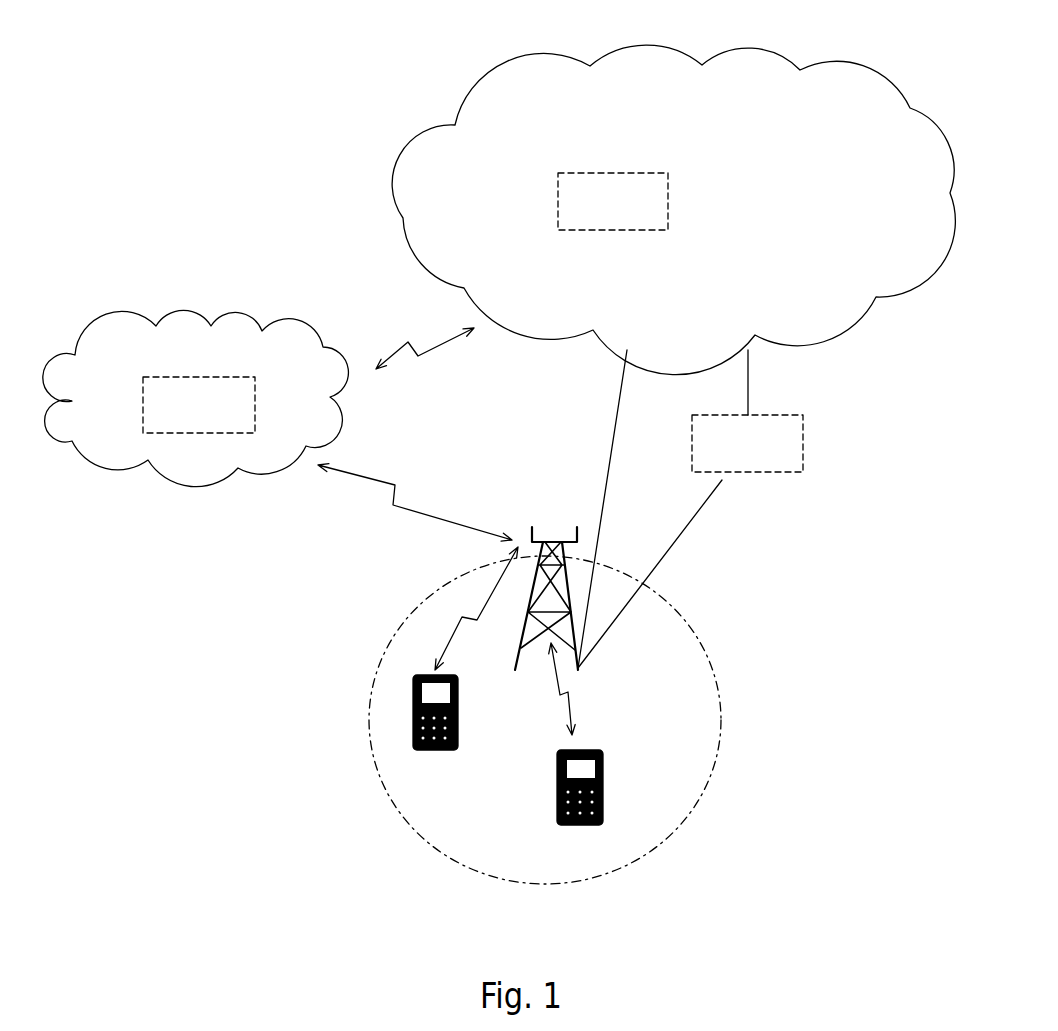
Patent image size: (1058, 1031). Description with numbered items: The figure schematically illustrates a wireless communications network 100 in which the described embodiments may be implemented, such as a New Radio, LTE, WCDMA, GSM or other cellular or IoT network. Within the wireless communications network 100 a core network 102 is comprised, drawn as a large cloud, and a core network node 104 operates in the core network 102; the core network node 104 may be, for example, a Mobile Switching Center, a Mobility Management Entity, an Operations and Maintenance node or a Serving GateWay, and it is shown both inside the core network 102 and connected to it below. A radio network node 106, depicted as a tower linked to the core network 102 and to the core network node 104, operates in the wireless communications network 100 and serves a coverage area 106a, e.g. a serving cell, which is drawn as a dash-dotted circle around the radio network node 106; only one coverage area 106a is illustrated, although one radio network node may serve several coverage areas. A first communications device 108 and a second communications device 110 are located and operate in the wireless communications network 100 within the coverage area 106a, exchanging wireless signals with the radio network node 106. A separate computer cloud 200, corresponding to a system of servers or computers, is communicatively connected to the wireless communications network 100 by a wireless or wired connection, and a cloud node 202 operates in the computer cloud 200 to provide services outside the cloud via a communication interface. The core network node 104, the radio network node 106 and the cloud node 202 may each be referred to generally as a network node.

The wireless communications network 100 is at (325, 207).
The core network 102 is at (473, 73).
The core network node 104 is at (668, 200).
The radio network node 106 is at (547, 537).
The coverage area 106a is at (723, 737).
The first communications device 108 is at (412, 735).
The second communications device 110 is at (600, 825).
The computer cloud 200 is at (212, 322).
The cloud node 202 is at (190, 433).